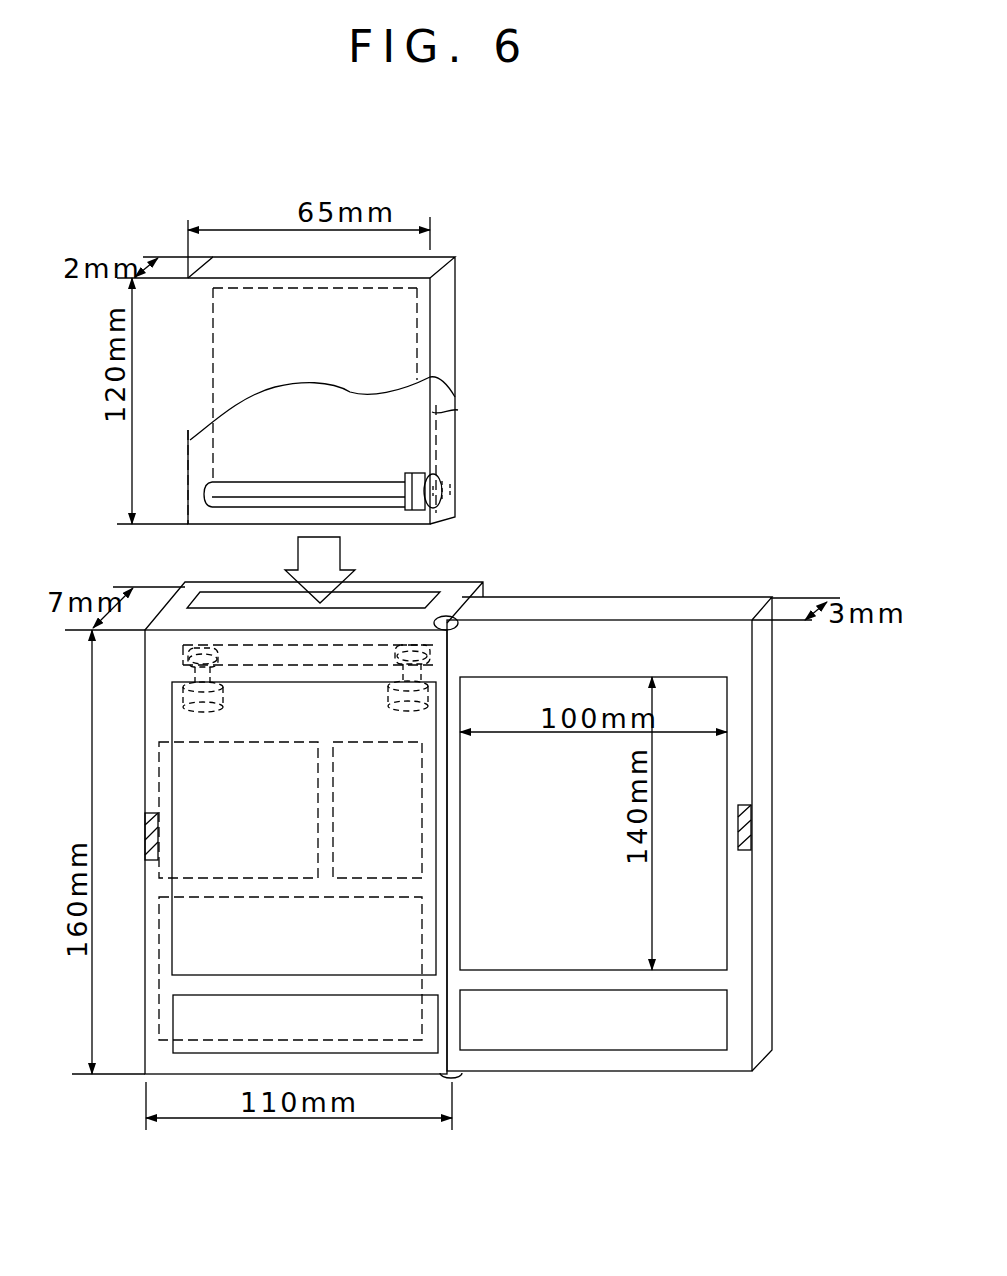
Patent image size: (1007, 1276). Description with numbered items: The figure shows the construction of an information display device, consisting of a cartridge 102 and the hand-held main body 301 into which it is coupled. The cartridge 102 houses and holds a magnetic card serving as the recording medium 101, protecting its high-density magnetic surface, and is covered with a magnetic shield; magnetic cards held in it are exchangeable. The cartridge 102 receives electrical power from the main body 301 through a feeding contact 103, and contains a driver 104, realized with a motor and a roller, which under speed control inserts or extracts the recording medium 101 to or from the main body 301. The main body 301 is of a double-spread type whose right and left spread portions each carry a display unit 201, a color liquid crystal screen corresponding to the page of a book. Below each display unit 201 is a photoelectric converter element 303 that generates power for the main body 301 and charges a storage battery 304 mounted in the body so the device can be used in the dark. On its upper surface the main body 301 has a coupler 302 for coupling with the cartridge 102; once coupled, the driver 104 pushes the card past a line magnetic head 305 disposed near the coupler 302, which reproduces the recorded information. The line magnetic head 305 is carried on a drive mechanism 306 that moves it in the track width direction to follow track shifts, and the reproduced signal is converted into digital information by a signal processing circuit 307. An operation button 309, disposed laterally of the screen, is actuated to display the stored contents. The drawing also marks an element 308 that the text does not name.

The recording medium 101 is at (432, 410).
The cartridge 102 is at (450, 295).
The feeding contact 103 is at (445, 498).
The driver 104 is at (377, 475).
The display unit 201 is at (172, 725).
The main body 301 is at (766, 700).
The coupler 302 is at (480, 594).
The photoelectric converter element 303 is at (353, 1053).
The storage battery 304 is at (423, 938).
The line magnetic head 305 is at (372, 640).
The drive mechanism 306 is at (223, 700).
The signal processing circuit 307 is at (158, 785).
The battery 308 is at (422, 808).
The operation button 309 is at (145, 828).